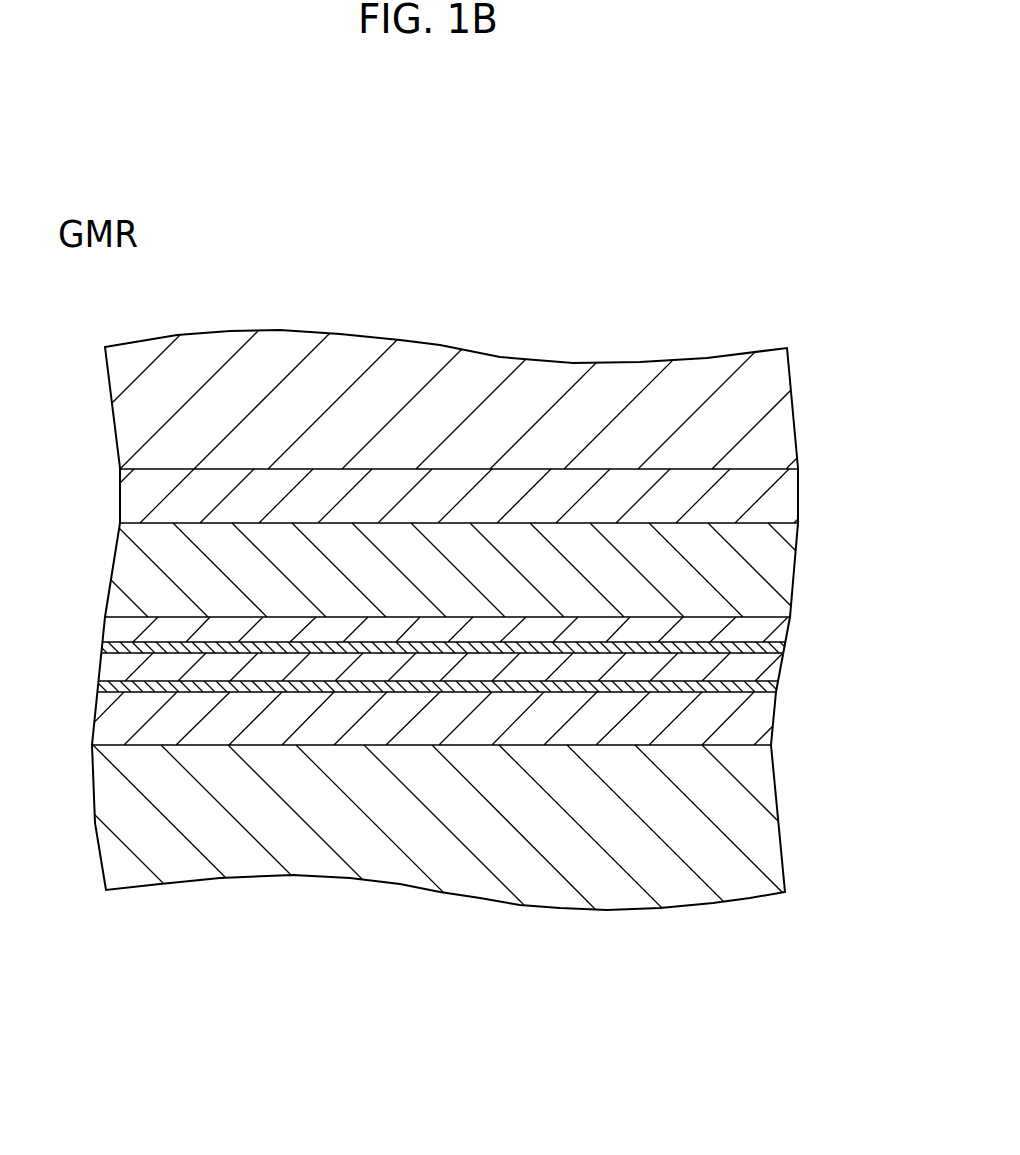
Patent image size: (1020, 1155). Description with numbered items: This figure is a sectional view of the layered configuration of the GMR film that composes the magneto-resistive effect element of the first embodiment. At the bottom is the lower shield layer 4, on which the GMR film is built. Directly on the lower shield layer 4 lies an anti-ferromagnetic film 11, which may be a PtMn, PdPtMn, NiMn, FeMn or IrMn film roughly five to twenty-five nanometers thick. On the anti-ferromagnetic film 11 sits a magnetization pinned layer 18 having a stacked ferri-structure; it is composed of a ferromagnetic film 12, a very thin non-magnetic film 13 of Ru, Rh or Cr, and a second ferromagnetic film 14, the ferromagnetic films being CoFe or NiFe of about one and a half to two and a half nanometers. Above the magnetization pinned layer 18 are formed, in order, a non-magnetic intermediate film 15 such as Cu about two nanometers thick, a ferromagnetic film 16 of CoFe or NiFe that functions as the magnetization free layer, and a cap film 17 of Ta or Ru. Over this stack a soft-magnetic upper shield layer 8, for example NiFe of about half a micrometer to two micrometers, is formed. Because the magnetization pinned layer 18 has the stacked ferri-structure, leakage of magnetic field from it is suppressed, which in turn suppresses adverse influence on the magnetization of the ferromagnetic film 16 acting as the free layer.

The lower shield layer 4 is at (620, 882).
The upper shield layer 8 is at (436, 398).
The anti-ferromagnetic film 11 is at (538, 722).
The ferromagnetic film 12 is at (458, 688).
The non-magnetic film 13 is at (390, 663).
The ferromagnetic film 14 is at (322, 648).
The non-magnetic intermediate film 15 is at (235, 627).
The ferromagnetic film 16 is at (650, 560).
The cap film 17 is at (552, 493).
The magnetization pinned layer 18 is at (434, 858).